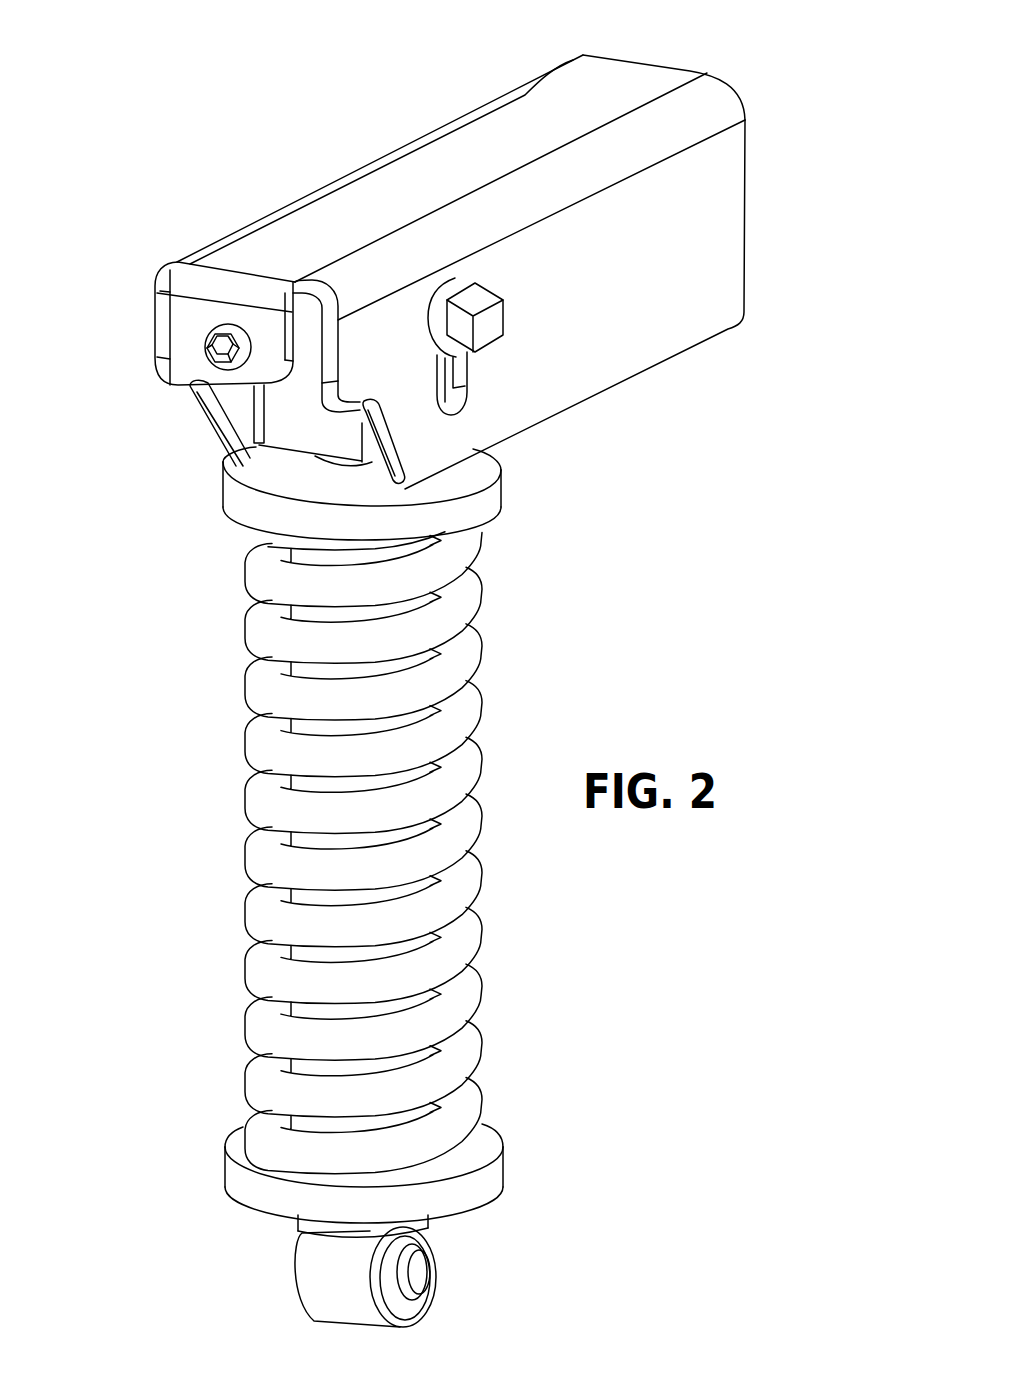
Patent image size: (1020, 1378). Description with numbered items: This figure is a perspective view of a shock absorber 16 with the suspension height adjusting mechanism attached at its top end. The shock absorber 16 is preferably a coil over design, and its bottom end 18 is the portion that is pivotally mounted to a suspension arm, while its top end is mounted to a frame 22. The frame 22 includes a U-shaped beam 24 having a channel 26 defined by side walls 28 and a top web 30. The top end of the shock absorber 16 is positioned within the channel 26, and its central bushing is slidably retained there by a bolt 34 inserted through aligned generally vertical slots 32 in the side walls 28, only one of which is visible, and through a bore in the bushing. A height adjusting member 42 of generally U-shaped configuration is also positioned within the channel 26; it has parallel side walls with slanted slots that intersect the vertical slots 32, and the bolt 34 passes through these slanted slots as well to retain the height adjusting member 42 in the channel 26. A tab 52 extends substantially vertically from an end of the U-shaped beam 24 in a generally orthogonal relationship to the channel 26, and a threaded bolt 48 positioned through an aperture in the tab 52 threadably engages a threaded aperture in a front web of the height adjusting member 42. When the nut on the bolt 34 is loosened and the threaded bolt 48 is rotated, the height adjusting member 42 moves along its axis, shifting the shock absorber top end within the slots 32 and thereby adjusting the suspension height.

The shock absorber 16 is at (452, 720).
The bottom end 18 is at (417, 1300).
The frame 22 is at (438, 264).
The U-shaped beam 24 is at (398, 190).
The channel 26 is at (238, 410).
The side walls 28 is at (680, 275).
The top web 30 is at (618, 92).
The generally vertical slots 32 is at (448, 415).
The bolt 34 is at (488, 313).
The height adjusting member 42 is at (312, 403).
The threaded bolt 48 is at (213, 357).
The tab 52 is at (194, 322).